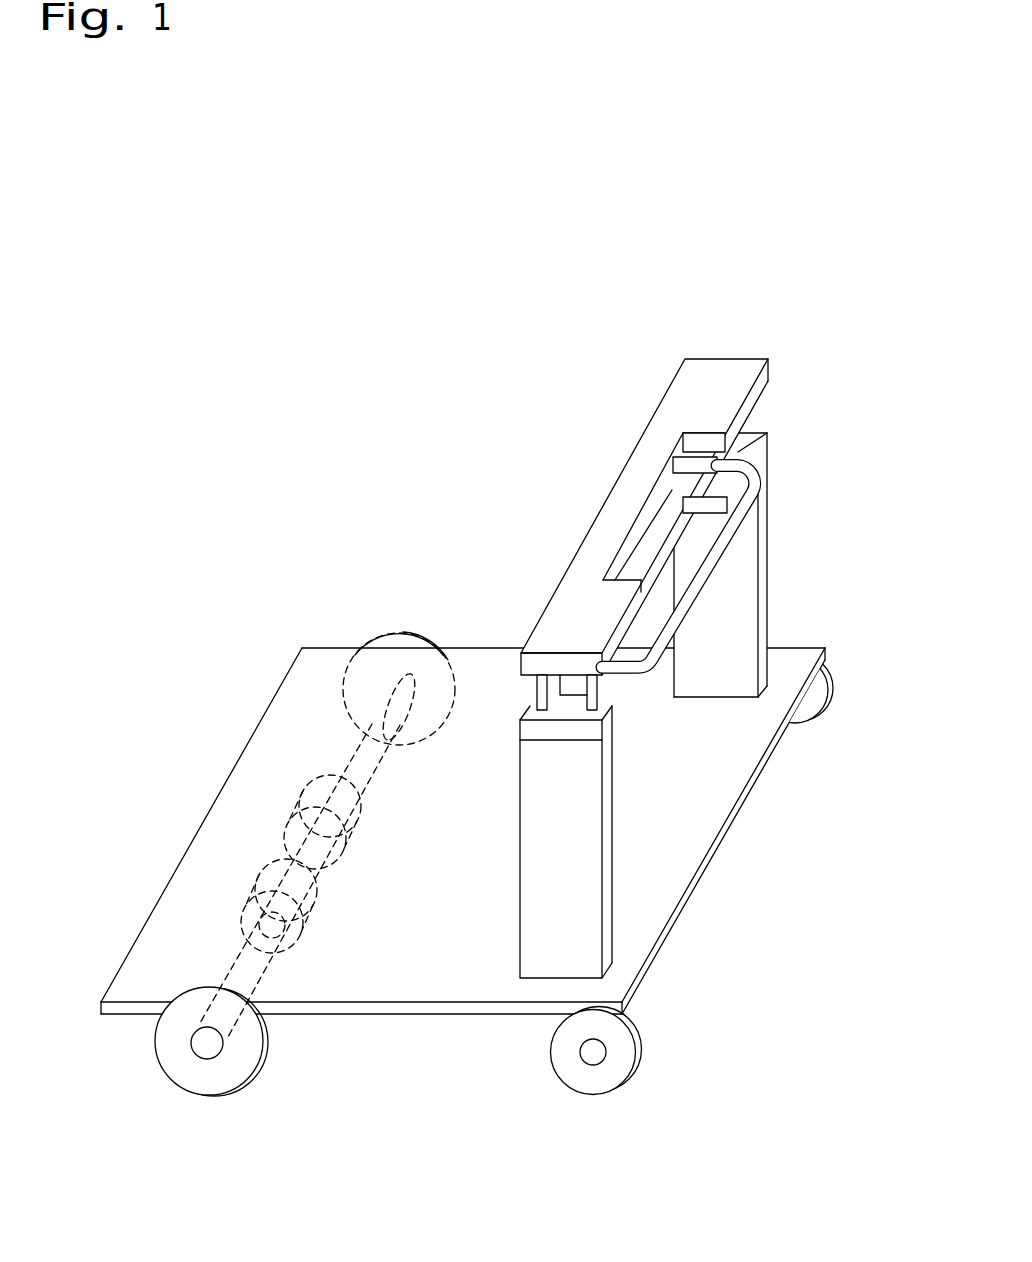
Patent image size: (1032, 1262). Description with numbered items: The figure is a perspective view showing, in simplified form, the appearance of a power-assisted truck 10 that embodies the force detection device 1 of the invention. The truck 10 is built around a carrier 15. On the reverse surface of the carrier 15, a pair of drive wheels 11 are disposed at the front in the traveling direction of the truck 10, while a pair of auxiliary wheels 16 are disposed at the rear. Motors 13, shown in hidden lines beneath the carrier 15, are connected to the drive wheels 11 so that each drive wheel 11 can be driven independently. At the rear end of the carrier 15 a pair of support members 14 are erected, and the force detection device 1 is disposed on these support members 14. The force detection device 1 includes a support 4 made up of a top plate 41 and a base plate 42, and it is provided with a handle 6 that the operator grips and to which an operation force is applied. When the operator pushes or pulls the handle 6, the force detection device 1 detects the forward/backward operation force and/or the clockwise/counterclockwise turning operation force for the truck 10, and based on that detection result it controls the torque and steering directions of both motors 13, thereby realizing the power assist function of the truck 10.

The force detection device 1 is at (701, 371).
The power-assisted truck 10 is at (410, 437).
The support 4 is at (861, 326).
The top plate 41 is at (740, 375).
The base plate 42 is at (744, 438).
The handle 6 is at (733, 529).
The drive wheels 11 is at (405, 633).
The motors 13 is at (304, 797).
The support members 14 is at (739, 596).
The carrier 15 is at (693, 808).
The auxiliary wheels 16 is at (828, 699).